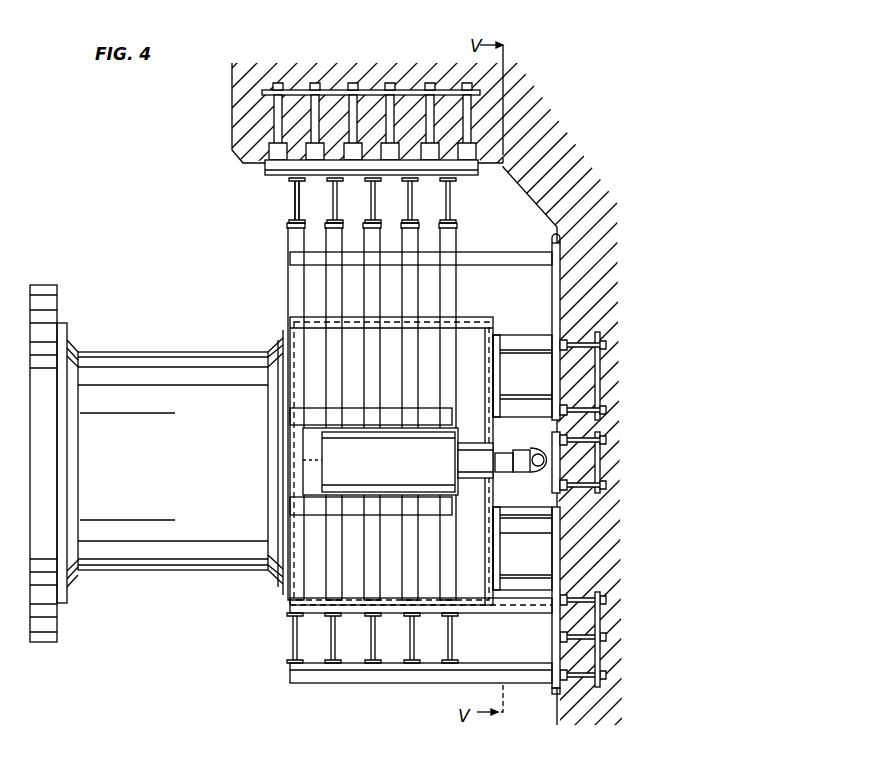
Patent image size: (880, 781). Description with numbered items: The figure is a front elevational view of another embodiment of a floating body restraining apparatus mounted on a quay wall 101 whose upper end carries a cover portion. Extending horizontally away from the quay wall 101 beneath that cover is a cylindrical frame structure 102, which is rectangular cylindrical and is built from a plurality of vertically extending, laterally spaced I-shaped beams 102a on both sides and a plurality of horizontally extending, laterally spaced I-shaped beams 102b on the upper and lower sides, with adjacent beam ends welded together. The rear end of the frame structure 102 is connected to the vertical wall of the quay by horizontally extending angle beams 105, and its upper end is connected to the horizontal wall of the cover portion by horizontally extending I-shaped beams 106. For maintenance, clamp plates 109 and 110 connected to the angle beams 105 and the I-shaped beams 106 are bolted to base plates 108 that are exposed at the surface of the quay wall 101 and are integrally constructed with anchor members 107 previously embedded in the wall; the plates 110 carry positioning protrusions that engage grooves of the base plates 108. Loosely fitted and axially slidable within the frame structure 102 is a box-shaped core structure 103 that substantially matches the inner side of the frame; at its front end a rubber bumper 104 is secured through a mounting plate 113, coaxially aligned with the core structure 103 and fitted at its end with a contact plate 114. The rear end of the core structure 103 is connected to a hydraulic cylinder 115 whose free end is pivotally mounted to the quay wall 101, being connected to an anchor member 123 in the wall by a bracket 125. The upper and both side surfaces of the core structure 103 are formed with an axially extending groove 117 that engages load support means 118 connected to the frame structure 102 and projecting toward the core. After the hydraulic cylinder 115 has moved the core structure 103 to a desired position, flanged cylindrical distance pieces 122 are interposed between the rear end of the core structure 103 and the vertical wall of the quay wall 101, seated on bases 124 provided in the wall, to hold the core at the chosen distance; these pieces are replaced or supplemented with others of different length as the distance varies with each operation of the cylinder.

The quay wall 101 is at (612, 150).
The cylindrical frame structure 102 is at (302, 581).
The I-shaped beams 102a is at (340, 231).
The I-shaped beams 102b is at (294, 636).
The core structure 103 is at (490, 305).
The bumper 104 is at (177, 458).
The angle beams 105 is at (560, 288).
The I-shaped beams 106 is at (334, 187).
The anchor members 107 is at (373, 91).
The base plates 108 is at (265, 168).
The clamp plates 109 is at (552, 242).
The clamp plates 110 is at (302, 203).
The mounting plate 113 is at (281, 331).
The contact plate 114 is at (54, 294).
The hydraulic cylinder 115 is at (512, 484).
The groove 117 is at (478, 454).
The load support means 118 is at (332, 461).
The distance pieces 122 is at (538, 350).
The anchor member 123 is at (603, 443).
The bases 124 is at (588, 382).
The bracket 125 is at (606, 419).